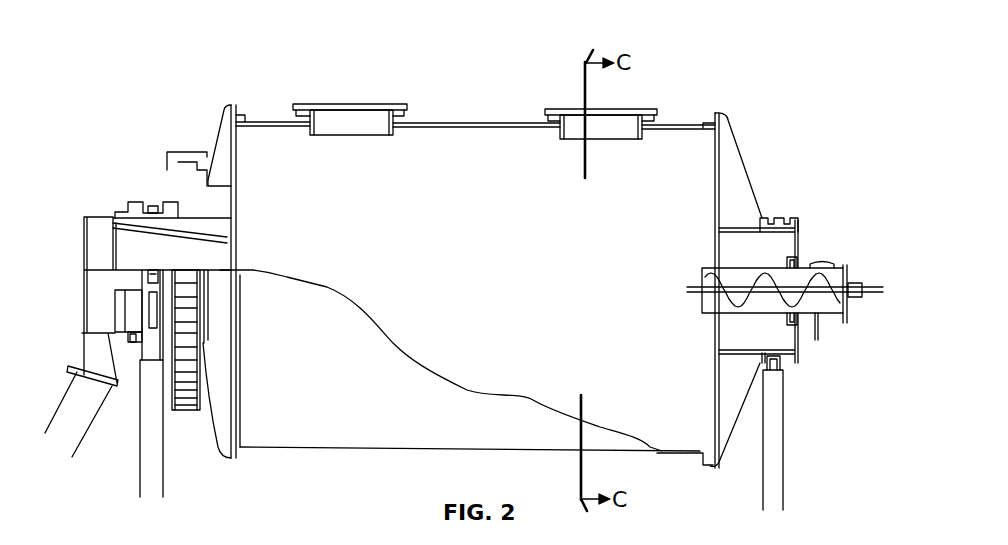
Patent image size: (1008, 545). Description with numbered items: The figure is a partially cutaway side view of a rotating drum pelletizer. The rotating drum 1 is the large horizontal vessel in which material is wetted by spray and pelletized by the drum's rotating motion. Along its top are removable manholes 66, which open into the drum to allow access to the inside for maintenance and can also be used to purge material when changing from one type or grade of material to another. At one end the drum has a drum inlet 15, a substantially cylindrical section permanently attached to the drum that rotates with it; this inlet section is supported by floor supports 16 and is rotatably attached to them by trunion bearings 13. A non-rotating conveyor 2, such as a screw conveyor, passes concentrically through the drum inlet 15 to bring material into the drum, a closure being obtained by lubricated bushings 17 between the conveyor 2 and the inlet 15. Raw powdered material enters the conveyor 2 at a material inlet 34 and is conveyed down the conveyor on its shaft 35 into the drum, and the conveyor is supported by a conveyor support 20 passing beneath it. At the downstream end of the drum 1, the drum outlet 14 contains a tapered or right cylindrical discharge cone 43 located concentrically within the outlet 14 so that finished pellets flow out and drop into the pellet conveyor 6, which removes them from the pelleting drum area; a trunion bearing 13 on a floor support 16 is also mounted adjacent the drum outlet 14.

The rotating drum 1 is at (492, 181).
The conveyor 2 is at (849, 278).
The pellet conveyor 6 is at (90, 411).
The trunion bearings 13 is at (172, 212).
The drum outlet 14 is at (80, 226).
The drum inlet 15 is at (749, 216).
The floor supports 16 is at (142, 432).
The lubricated bushings 17 is at (795, 262).
The conveyor support 20 is at (812, 340).
The material inlet 34 is at (830, 264).
The shaft 35 is at (883, 294).
The discharge cone 43 is at (158, 234).
The removable manholes 66 is at (337, 104).